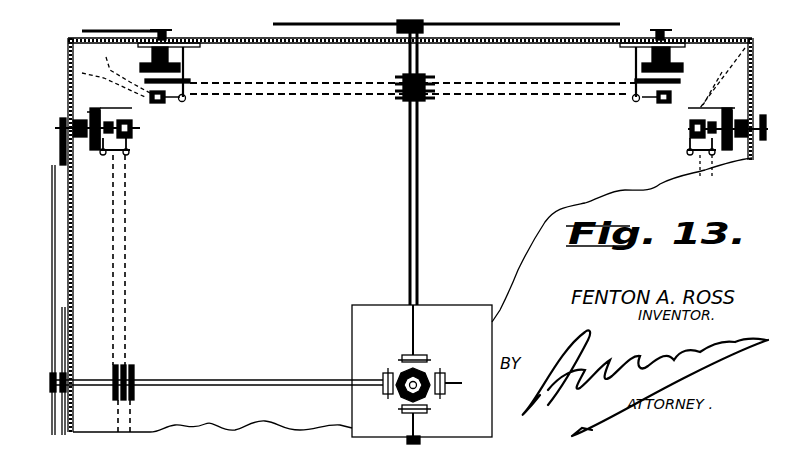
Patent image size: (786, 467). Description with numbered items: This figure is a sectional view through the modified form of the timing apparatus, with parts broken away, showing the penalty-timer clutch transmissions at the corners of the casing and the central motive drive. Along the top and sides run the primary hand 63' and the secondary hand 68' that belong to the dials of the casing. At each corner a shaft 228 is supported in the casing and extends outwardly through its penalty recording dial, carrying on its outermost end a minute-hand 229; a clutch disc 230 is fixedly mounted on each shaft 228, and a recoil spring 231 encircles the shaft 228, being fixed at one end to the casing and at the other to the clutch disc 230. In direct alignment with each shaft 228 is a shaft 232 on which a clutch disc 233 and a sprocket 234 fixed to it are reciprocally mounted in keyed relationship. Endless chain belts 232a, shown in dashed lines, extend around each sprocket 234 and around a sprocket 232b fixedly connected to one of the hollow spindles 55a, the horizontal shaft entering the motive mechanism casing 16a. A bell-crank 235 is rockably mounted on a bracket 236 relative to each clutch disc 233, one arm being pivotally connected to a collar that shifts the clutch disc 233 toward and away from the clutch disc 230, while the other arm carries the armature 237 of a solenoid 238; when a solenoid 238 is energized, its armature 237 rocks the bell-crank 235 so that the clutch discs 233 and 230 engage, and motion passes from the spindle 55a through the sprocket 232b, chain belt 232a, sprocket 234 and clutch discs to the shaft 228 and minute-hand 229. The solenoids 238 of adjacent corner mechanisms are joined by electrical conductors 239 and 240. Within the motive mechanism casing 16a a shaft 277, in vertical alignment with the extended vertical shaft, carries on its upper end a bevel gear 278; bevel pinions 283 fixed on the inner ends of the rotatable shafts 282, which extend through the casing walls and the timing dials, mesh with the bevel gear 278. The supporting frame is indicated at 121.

The frame 121 is at (348, 44).
The primary hand 63' is at (226, 219).
The secondary hand 68' is at (336, 131).
The motive mechanism casing 16a is at (370, 320).
The hollow spindle 55a is at (184, 379).
The shaft 228 is at (166, 36).
The minute-hand 229 is at (140, 27).
The clutch disc 230 is at (141, 67).
The recoil spring 231 is at (152, 52).
The shaft 232 is at (134, 128).
The endless chain belt 232a is at (290, 84).
The sprocket 232b is at (425, 82).
The clutch disc 233 is at (192, 80).
The sprocket 234 is at (130, 150).
The bell-crank 235 is at (192, 82).
The bracket 236 is at (186, 50).
The armature 237 is at (186, 96).
The solenoid 238 is at (185, 100).
The electrical conductor 239 is at (82, 72).
The electrical conductor 240 is at (106, 56).
The shaft 277 is at (408, 388).
The bevel gear 278 is at (427, 398).
The rotatable shaft 282 is at (412, 338).
The bevel pinion 283 is at (438, 370).